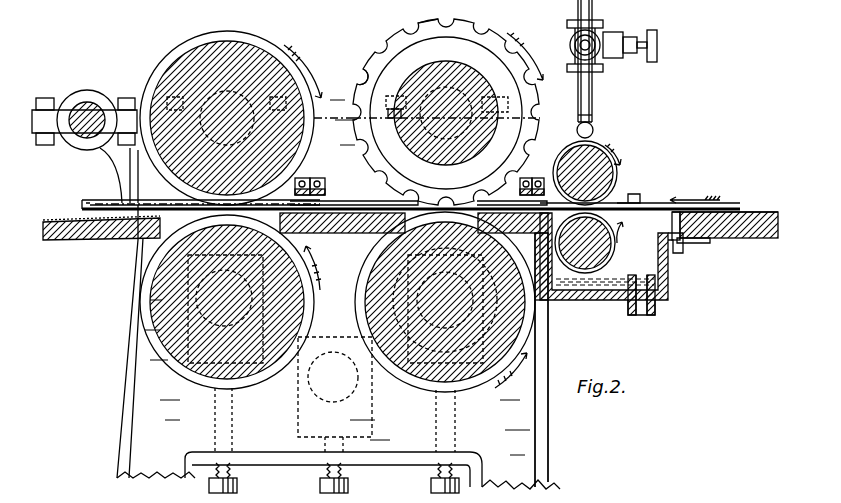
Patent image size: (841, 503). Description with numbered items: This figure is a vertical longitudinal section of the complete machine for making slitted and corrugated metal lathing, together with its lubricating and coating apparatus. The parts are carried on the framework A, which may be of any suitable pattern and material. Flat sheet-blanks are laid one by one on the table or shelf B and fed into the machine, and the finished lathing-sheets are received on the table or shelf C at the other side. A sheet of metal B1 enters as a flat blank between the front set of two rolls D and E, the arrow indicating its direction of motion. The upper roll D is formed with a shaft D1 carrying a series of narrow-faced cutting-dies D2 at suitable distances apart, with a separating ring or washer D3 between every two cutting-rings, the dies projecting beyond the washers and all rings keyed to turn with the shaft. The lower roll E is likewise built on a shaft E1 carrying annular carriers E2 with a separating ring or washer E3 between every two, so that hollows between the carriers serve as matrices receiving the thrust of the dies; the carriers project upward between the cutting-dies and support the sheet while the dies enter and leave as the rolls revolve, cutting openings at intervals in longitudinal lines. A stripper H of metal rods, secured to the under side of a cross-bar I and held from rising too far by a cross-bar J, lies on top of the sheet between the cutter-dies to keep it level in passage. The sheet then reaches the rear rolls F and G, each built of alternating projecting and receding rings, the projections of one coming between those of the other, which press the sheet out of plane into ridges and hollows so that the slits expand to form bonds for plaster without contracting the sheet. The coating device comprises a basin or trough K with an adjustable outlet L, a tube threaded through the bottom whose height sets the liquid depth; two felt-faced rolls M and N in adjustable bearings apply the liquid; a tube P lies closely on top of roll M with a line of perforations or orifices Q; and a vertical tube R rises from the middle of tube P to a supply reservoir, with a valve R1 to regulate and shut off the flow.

The framework A is at (338, 296).
The table or shelf B is at (729, 238).
The sheet of metal B1 is at (95, 202).
The table or shelf C is at (68, 240).
The upper roll D is at (405, 62).
The shaft D1 is at (394, 108).
The cutting-dies D2 is at (428, 22).
The separating ring or washer D3 is at (358, 80).
The lower roll E is at (457, 382).
The shaft E1 is at (530, 324).
The annular carriers E2 is at (339, 272).
The separating ring or washer E3 is at (365, 378).
The rear roll F is at (158, 80).
The rear roll G is at (149, 291).
The stripper H is at (372, 186).
The cross-bar I is at (532, 176).
The cross-bar J is at (310, 175).
The basin or trough K is at (611, 256).
The adjustable outlet L is at (641, 315).
The roll M is at (617, 167).
The roll N is at (597, 243).
The tube P is at (594, 130).
The perforations or orifices Q is at (577, 131).
The vertical tube R is at (594, 90).
The valve R1 is at (618, 60).